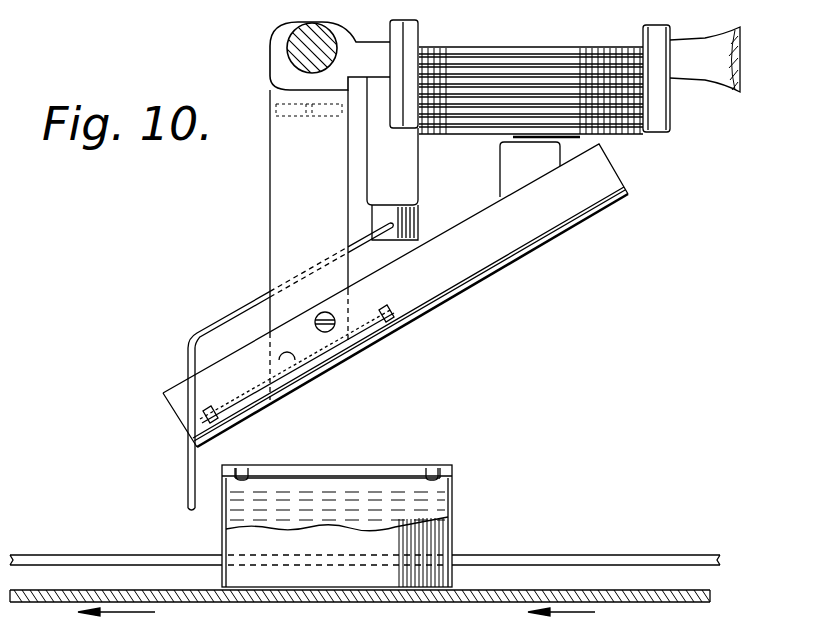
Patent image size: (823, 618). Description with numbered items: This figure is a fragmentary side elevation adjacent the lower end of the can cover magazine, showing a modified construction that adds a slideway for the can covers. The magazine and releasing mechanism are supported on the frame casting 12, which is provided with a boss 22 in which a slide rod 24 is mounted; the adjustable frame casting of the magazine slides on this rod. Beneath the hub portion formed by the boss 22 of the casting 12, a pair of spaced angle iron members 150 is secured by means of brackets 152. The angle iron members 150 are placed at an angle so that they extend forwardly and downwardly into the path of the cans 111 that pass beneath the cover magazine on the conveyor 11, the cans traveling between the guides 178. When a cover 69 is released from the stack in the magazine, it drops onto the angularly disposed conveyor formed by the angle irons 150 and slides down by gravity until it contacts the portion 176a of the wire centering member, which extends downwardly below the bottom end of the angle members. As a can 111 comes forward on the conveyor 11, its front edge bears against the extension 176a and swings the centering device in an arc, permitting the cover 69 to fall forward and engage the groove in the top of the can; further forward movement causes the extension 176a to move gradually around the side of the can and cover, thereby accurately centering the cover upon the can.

The conveyor 11 is at (548, 592).
The frame casting 12 is at (366, 47).
The boss 22 is at (282, 70).
The slide rod 24 is at (287, 44).
The can cover 69 is at (620, 140).
The can 111 is at (447, 532).
The angle iron member 150 is at (462, 284).
The bracket 152 is at (272, 207).
The downwardly extending portion of wire member 176a is at (189, 473).
The guide 178 is at (700, 533).